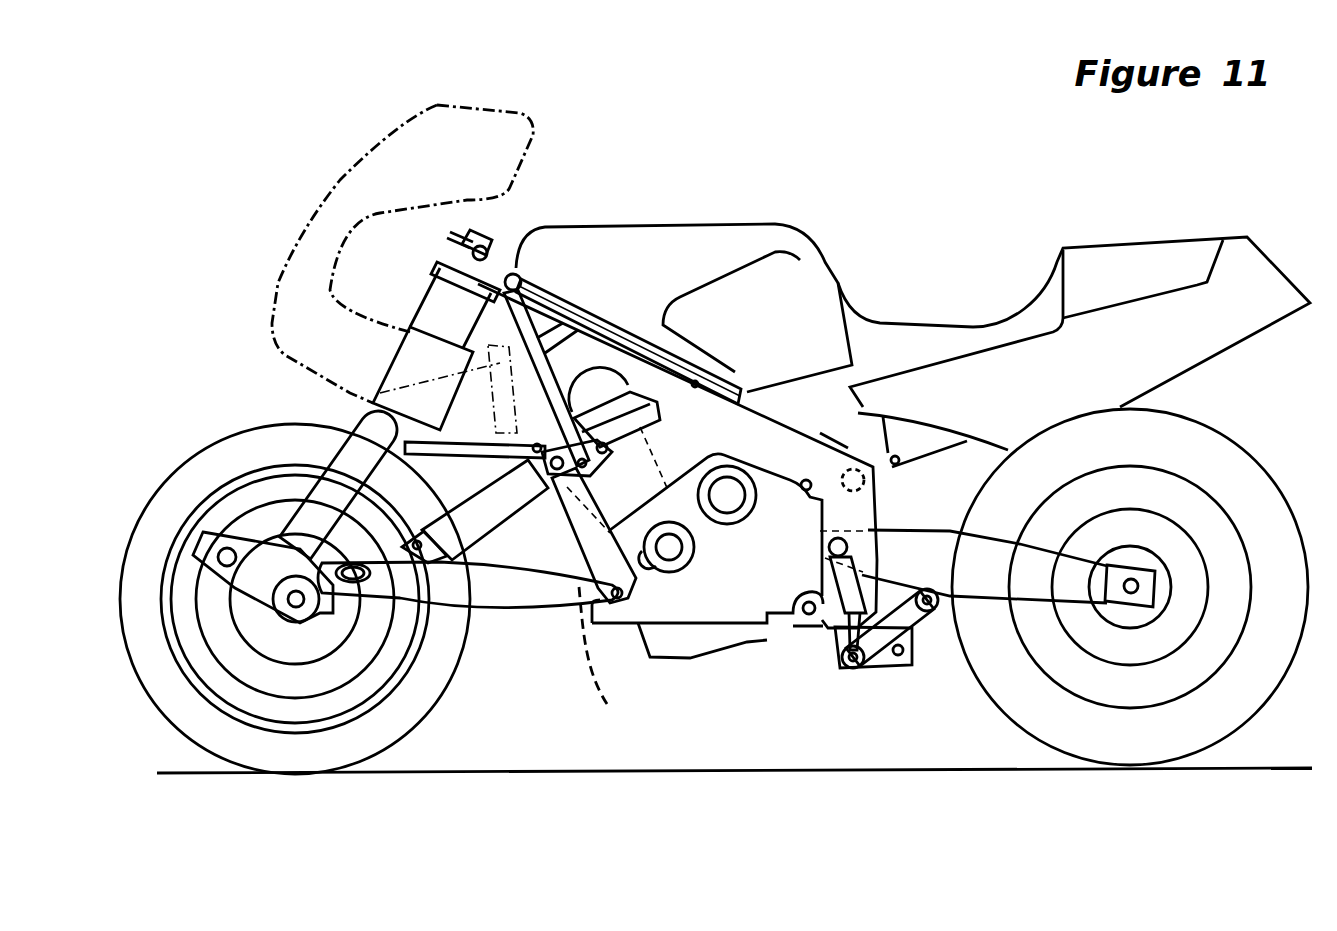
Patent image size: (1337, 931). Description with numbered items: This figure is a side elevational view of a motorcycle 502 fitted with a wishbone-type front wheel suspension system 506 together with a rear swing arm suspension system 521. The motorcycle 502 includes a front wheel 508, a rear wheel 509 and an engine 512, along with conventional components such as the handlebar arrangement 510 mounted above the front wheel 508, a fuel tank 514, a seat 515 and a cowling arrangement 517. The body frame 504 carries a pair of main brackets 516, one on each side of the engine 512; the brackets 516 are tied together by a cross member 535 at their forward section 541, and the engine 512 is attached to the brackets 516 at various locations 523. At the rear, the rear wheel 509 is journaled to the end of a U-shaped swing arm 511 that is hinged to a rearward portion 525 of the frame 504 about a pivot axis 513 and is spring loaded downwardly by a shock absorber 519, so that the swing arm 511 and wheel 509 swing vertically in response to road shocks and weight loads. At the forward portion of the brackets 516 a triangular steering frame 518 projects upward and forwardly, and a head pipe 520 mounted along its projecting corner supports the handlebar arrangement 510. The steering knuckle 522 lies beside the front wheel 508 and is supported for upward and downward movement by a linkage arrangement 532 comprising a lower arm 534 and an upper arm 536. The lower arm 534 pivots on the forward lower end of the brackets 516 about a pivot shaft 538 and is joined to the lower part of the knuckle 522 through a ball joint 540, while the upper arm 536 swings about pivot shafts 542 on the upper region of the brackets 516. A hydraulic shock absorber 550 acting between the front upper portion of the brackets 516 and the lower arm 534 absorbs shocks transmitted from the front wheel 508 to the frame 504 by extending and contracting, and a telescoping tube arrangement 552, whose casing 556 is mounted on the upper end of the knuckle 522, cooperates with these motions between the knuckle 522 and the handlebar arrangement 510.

The motorcycle 502 is at (935, 179).
The body frame 504 is at (790, 414).
The front wheel suspension system 506 is at (345, 427).
The front wheel 508 is at (433, 693).
The rear wheel 509 is at (1110, 748).
The handlebar arrangement 510 is at (515, 227).
The swing arm 511 is at (1003, 588).
The engine 512 is at (730, 613).
The pivot axis 513 is at (826, 558).
The fuel tank 514 is at (651, 223).
The seat 515 is at (927, 327).
The main brackets 516 is at (870, 410).
The cowling arrangement 517 is at (367, 172).
The steering frame 518 is at (563, 313).
The shock absorber 519 is at (897, 512).
The head pipe 520 is at (466, 254).
The rear swing arm suspension system 521 is at (983, 528).
The steering knuckle 522 is at (327, 495).
The locations 523 is at (803, 478).
The rearward portion 525 is at (878, 590).
The linkage arrangement 532 is at (556, 628).
The lower arm 534 is at (480, 603).
The cross member 535 is at (618, 650).
The upper arm 536 is at (503, 452).
The pivot shaft 538 is at (622, 606).
The ball joint 540 is at (345, 606).
The forward section 541 is at (667, 572).
The pivot shafts 542 is at (560, 404).
The hydraulic shock absorber 550 is at (500, 500).
The telescoping tube arrangement 552 is at (398, 337).
The casing 556 is at (403, 378).